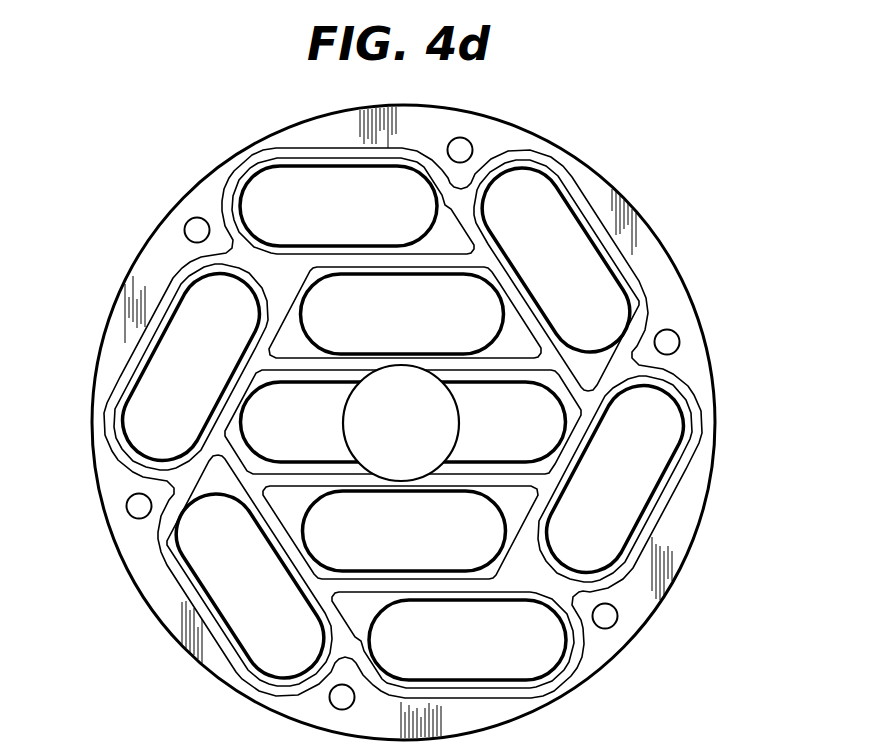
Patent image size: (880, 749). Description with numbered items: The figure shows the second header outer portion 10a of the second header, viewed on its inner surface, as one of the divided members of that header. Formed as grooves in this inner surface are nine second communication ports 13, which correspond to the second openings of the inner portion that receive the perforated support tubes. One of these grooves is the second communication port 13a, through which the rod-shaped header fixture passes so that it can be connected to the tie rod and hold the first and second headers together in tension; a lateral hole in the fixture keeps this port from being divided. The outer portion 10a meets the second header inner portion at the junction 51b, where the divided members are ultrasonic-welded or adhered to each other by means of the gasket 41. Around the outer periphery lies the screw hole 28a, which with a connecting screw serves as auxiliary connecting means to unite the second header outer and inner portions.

The second header outer portion 10a is at (634, 217).
The junction 51b is at (658, 284).
The gasket 41 is at (467, 187).
The second communication port 13 is at (664, 443).
The second communication port 13a is at (247, 428).
The screw hole 28a is at (190, 229).